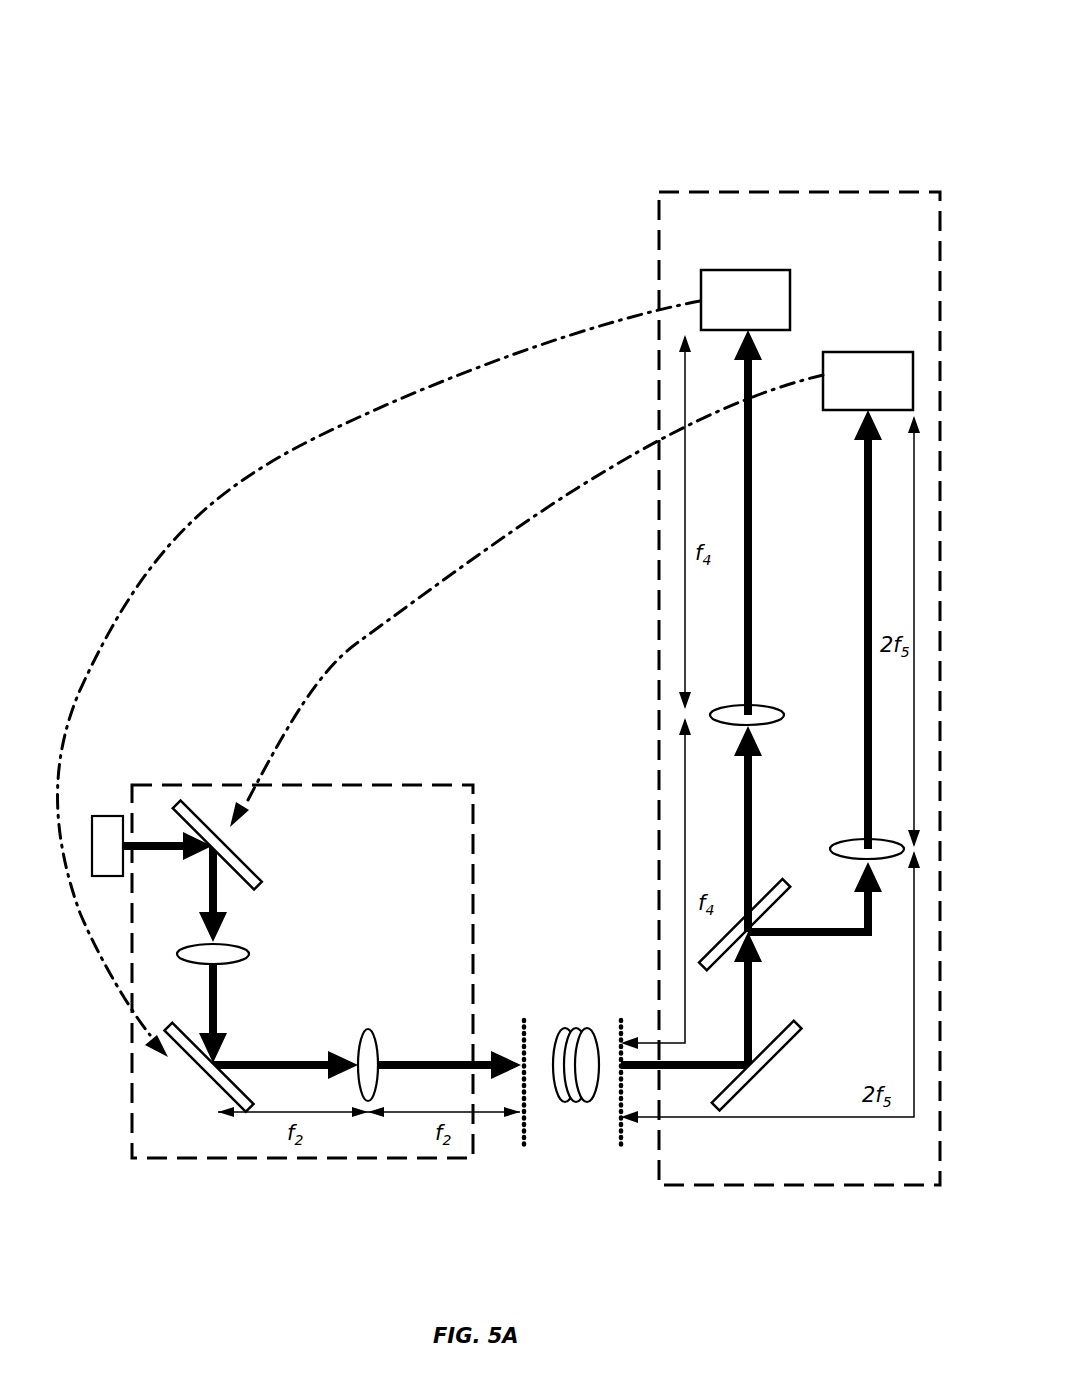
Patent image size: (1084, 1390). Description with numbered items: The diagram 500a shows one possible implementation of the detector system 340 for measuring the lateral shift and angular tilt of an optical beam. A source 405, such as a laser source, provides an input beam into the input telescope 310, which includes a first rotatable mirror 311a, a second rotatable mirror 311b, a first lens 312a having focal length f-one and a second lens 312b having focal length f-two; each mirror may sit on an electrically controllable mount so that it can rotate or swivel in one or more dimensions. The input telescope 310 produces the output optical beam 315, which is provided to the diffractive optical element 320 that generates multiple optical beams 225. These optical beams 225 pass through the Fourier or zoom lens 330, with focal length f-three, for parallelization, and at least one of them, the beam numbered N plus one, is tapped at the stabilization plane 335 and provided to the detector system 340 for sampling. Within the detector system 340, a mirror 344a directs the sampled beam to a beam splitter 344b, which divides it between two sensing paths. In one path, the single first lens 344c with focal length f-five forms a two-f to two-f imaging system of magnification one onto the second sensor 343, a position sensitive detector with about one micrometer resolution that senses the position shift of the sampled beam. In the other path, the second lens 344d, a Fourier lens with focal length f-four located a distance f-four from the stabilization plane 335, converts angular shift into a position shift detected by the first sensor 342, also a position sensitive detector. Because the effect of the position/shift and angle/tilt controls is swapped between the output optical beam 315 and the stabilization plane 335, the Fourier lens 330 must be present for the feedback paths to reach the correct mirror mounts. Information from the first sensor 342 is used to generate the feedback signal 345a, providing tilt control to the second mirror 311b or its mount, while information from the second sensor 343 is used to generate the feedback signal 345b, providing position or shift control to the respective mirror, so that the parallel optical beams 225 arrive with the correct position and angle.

The diagram 500a is at (205, 38).
The source 405 is at (108, 815).
The input telescope 310 is at (386, 785).
The first rotatable mirror 311a is at (260, 880).
The second rotatable mirror 311b is at (174, 1029).
The first lens 312a is at (248, 954).
The second lens 312b is at (368, 1029).
The output optical beam 315 is at (440, 1063).
The diffractive optical element 320 is at (528, 1024).
The Fourier lens 330 is at (575, 1118).
The stabilization plane 335 is at (626, 1024).
The detector system 340 is at (835, 190).
The sensor 1 342 is at (744, 269).
The sensor 2 343 is at (863, 352).
The mirror 344a is at (800, 1030).
The beam splitter 344b is at (783, 892).
The first lens 344c is at (828, 842).
The second lens 344d is at (782, 712).
The feedback signal 345a is at (316, 432).
The feedback signal 345b is at (490, 538).
The optical beams 225 is at (696, 1070).